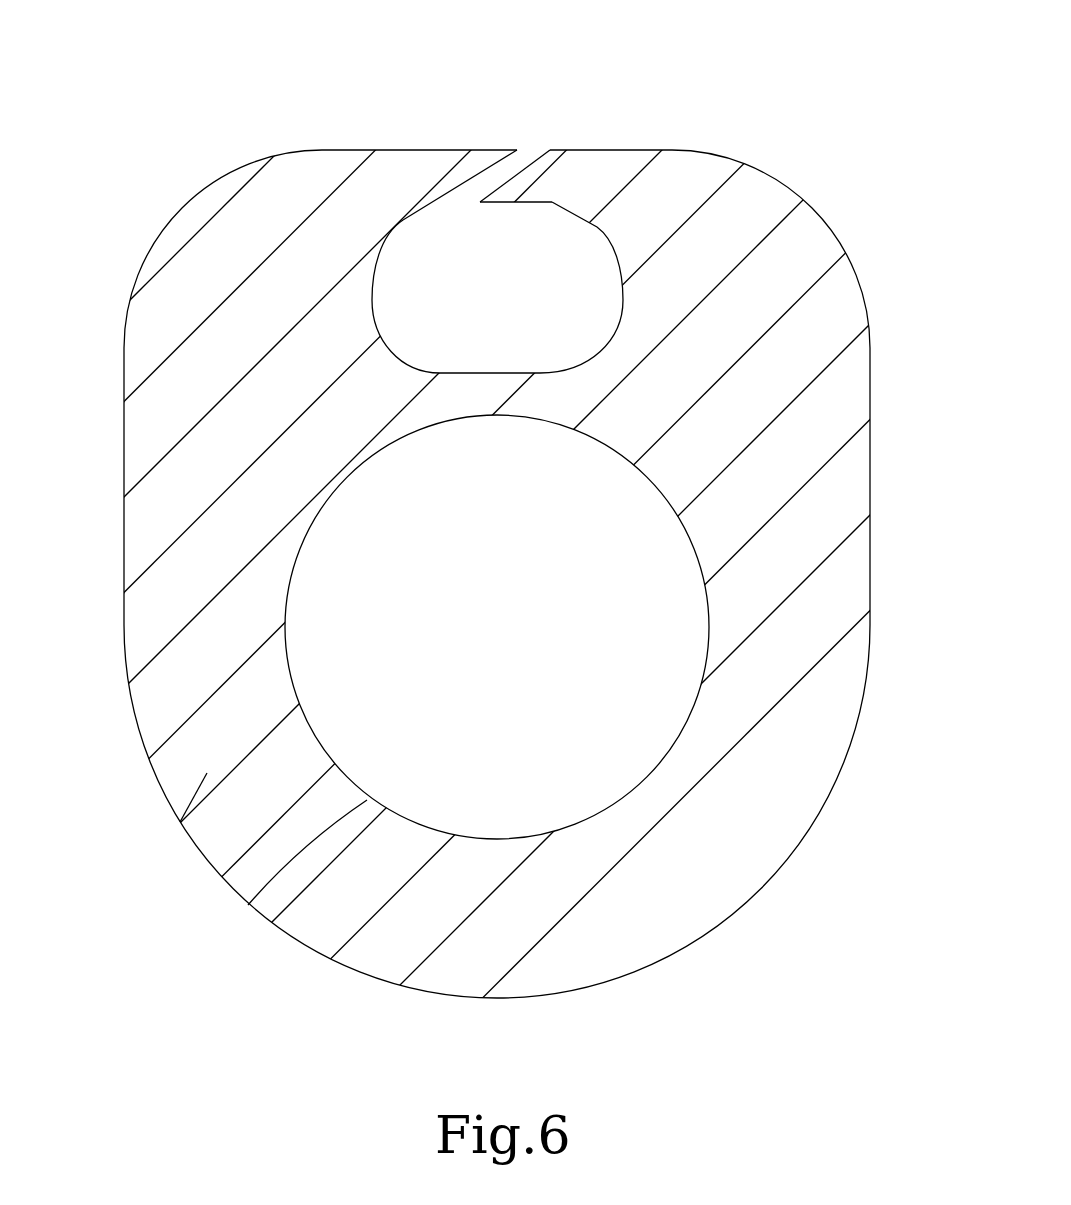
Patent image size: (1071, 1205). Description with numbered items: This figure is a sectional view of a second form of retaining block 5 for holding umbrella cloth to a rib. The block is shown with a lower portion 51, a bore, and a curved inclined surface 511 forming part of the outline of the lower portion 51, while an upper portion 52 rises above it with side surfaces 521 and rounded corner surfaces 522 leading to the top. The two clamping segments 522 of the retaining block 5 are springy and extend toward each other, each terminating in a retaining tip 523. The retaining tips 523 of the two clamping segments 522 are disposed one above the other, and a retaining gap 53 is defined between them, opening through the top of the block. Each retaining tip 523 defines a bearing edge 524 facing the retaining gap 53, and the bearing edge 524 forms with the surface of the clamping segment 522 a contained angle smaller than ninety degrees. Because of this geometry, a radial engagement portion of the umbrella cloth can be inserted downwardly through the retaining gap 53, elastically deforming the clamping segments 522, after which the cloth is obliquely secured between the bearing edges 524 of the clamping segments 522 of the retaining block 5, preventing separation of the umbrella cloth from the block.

The retaining block 5 is at (785, 865).
The lower portion with bore 51 is at (172, 807).
The inclined surface 511 is at (250, 906).
The upper portion 52 is at (245, 168).
The side surface 521 is at (163, 382).
The clamping segment 522 is at (373, 180).
The retaining tip 523 is at (463, 165).
The bearing edge 524 is at (503, 158).
The retaining gap 53 is at (527, 155).